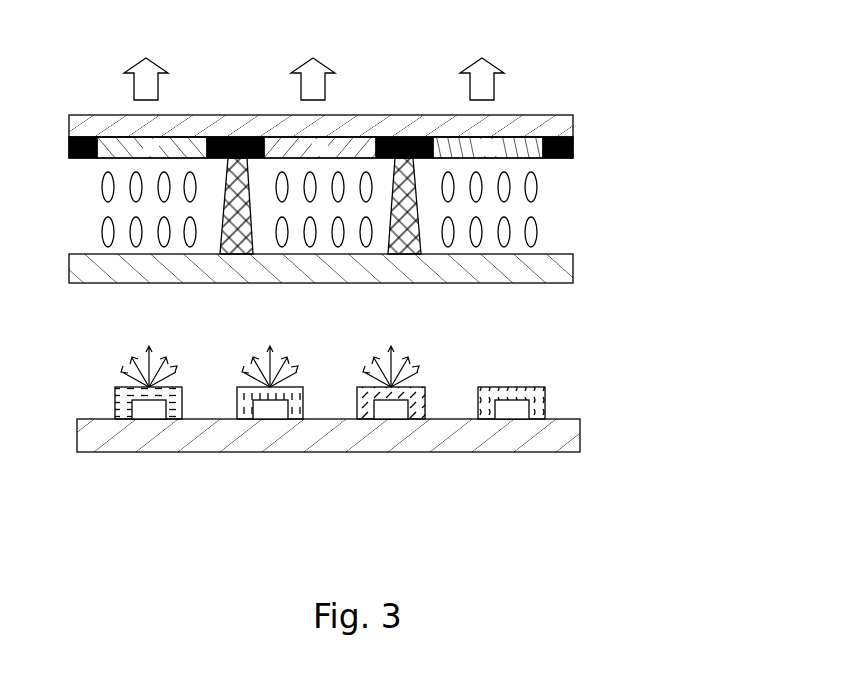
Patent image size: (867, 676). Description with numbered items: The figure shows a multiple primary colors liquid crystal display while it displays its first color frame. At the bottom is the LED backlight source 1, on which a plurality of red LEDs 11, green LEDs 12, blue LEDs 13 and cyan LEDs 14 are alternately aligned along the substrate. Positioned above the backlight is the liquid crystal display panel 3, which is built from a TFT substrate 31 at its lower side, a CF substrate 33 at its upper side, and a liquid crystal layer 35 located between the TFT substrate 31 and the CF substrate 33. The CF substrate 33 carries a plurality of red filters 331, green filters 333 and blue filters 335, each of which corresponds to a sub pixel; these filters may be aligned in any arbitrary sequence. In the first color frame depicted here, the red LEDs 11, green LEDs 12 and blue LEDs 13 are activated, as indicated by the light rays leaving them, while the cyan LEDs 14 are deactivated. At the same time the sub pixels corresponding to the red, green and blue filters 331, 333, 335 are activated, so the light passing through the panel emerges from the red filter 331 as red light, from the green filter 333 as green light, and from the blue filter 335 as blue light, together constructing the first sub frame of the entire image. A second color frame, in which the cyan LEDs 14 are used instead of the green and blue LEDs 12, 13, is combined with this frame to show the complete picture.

The LED backlight source 1 is at (54, 398).
The red LED 11 is at (157, 410).
The green LED 12 is at (278, 410).
The blue LED 13 is at (399, 410).
The cyan LED 14 is at (520, 410).
The liquid crystal display panel 3 is at (42, 125).
The TFT substrate 31 is at (505, 268).
The CF substrate 33 is at (585, 118).
The red filter 331 is at (180, 157).
The green filter 333 is at (344, 156).
The blue filter 335 is at (505, 157).
The liquid crystal layer 35 is at (503, 192).